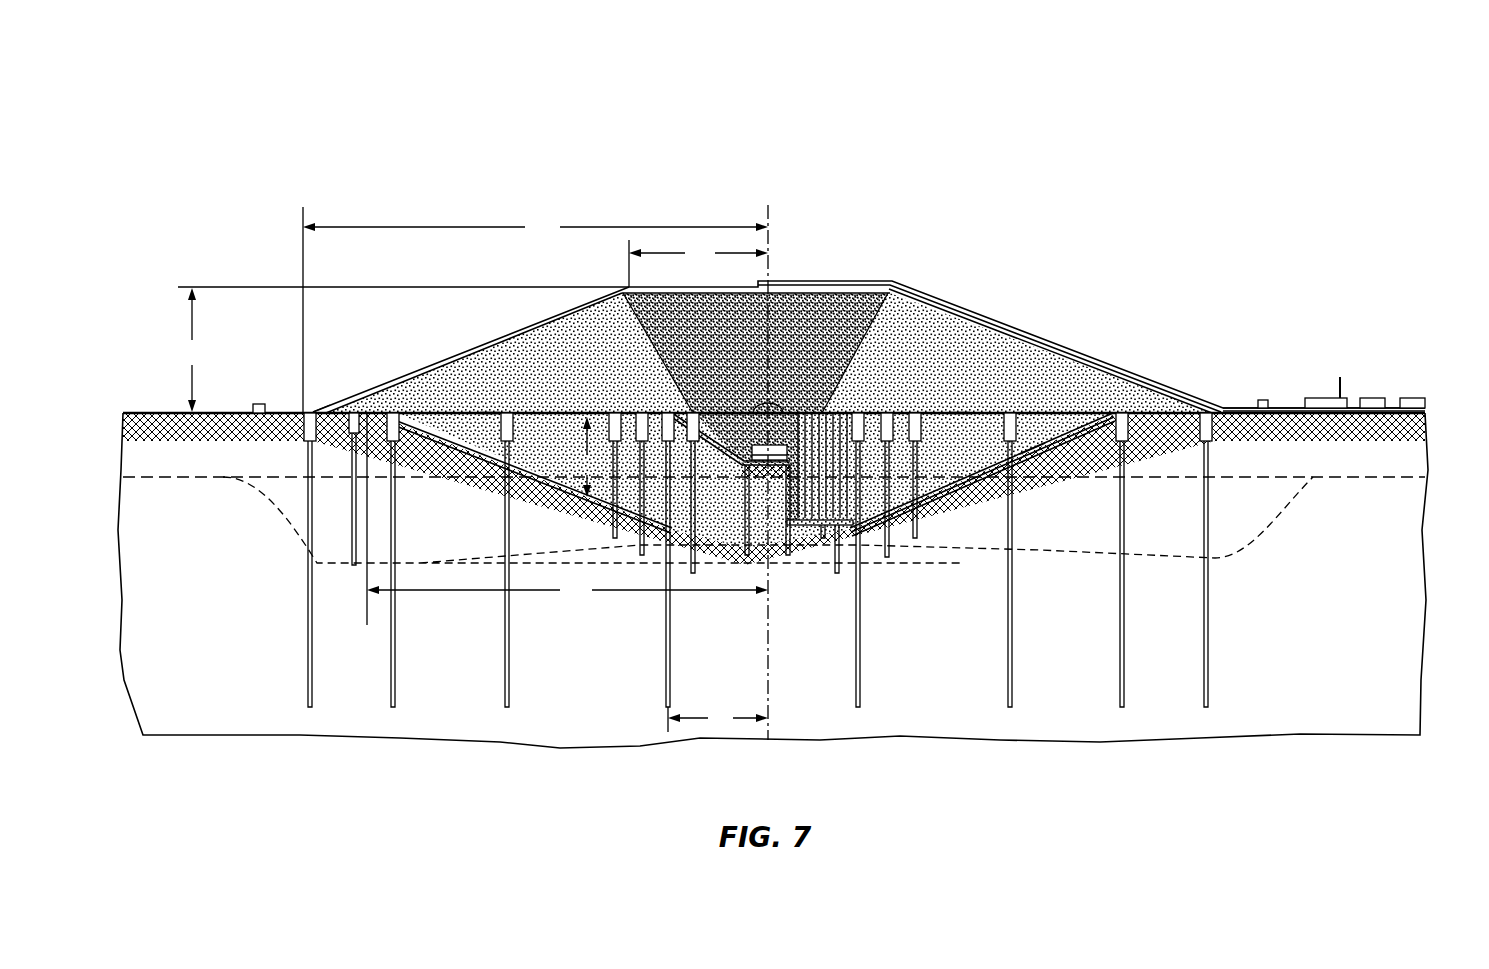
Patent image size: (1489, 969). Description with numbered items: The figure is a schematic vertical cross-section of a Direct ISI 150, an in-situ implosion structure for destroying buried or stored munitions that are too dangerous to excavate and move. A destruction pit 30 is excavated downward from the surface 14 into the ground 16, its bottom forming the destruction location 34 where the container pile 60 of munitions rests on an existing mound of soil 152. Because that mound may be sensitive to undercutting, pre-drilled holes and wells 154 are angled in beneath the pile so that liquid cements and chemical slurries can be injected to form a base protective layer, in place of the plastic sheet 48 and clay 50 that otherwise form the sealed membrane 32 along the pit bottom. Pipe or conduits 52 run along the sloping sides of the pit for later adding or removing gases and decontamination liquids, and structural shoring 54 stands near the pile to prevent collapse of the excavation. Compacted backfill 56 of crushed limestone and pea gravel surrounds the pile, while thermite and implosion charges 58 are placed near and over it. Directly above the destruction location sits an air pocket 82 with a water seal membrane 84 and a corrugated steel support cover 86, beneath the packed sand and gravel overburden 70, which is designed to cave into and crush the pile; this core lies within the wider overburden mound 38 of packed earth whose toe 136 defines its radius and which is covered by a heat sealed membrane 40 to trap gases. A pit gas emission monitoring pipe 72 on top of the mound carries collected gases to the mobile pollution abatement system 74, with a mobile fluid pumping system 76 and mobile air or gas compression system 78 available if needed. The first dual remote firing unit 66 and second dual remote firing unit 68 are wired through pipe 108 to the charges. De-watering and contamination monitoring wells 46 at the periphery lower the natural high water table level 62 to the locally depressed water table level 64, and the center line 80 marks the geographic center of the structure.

The Direct ISI 150 is at (410, 163).
The surface 14 is at (185, 413).
The ground / soil 16 is at (210, 581).
The destruction pit 30 is at (927, 517).
The sealed membrane 32 is at (1023, 480).
The destruction location 34 is at (762, 490).
The overburden mound 38 is at (618, 356).
The heat sealed membrane 40 is at (465, 352).
The de-watering and contamination monitoring wells 46 is at (300, 447).
The plastic sheet 48 is at (490, 460).
The clay 50 is at (1033, 452).
The pipe or conduits 52 is at (990, 468).
The structural shoring 54 is at (862, 413).
The compacted backfill 56 is at (663, 410).
The thermite and implosion charges 58 is at (772, 480).
The container pile 60 is at (747, 457).
The natural high water table level 62 is at (1145, 476).
The locally depressed water table level 64 is at (1147, 553).
The first dual remote firing unit 66 is at (253, 408).
The second dual remote firing unit 68 is at (1258, 400).
The packed sand and gravel overburden 70 is at (837, 333).
The pit gas emission monitoring pipe 72 is at (820, 283).
The mobile pollution abatement system 74 is at (1335, 400).
The mobile fluid pumping system 76 is at (1367, 398).
The mobile air or gas compression system 78 is at (1417, 398).
The center line 80 is at (770, 217).
The air pocket 82 is at (762, 403).
The water seal membrane 84 is at (775, 403).
The corrugated steel support cover 86 is at (817, 408).
The pipe 108 is at (490, 408).
The toe 136 is at (317, 407).
The mound of soil 152 is at (700, 528).
The pre-drilled holes and wells 154 is at (610, 517).